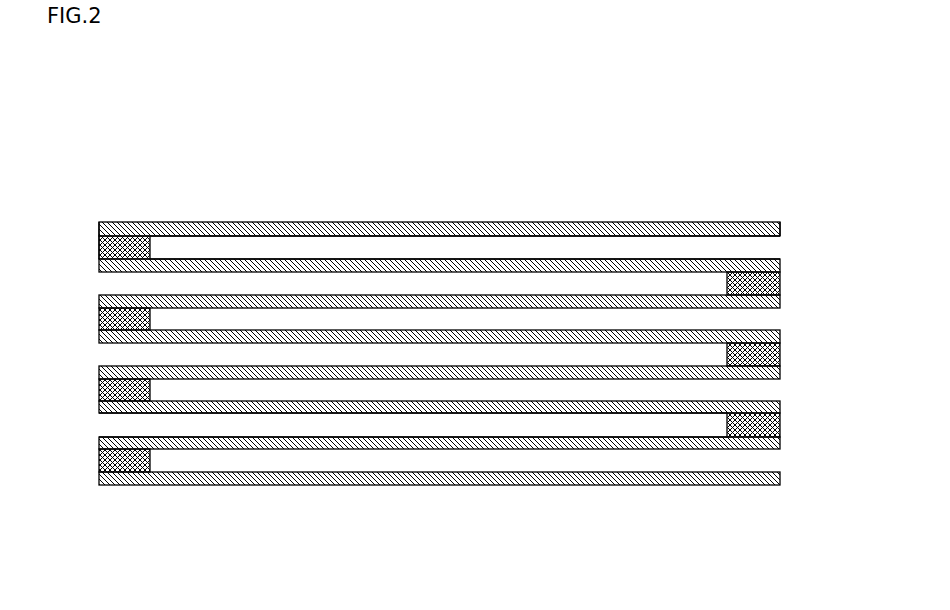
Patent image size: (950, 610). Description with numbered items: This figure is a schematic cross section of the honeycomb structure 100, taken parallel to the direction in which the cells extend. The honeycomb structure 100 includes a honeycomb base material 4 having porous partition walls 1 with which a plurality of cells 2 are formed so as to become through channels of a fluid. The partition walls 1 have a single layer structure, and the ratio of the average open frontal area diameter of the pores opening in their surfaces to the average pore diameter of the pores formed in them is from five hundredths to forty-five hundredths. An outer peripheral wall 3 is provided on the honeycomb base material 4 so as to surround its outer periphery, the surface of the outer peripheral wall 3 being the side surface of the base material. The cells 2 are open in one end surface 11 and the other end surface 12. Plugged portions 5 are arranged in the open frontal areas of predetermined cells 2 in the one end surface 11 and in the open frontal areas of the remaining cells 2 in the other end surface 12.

The honeycomb structure 100 is at (841, 82).
The partition walls 1 is at (236, 259).
The cells 2 is at (345, 248).
The outer peripheral wall 3 is at (523, 222).
The honeycomb base material 4 is at (555, 485).
The plugged portions 5 is at (98, 388).
The one end surface 11 is at (97, 226).
The other end surface 12 is at (780, 229).